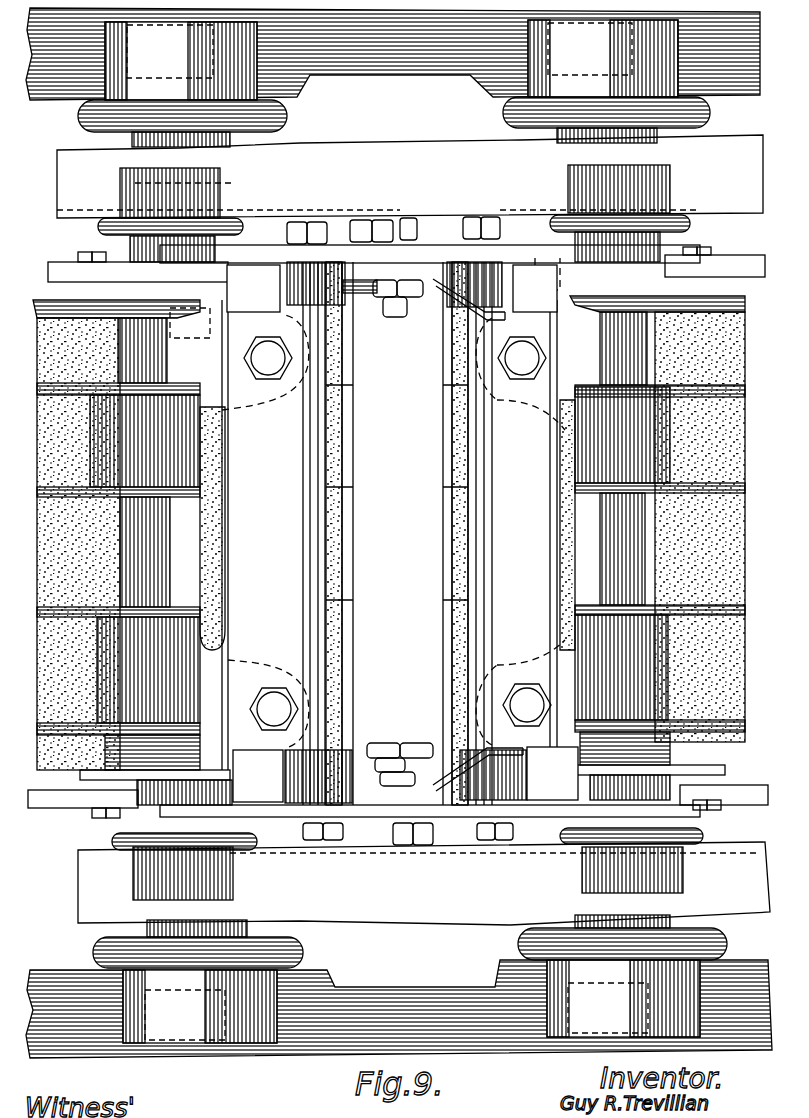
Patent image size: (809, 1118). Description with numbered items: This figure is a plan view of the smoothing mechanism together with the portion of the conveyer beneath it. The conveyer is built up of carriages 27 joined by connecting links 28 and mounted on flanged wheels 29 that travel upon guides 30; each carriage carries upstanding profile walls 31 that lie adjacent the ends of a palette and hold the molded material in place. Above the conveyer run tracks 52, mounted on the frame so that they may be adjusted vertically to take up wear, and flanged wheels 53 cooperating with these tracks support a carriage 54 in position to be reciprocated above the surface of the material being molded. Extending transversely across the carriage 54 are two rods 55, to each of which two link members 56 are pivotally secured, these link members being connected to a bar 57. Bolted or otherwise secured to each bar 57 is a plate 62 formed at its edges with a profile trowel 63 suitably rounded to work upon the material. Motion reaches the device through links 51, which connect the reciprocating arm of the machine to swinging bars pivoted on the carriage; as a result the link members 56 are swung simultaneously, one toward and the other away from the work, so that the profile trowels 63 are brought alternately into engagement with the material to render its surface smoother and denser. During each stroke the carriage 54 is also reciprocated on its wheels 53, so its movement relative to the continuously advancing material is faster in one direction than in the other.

The carriage 27 is at (275, 820).
The connecting link 28 is at (62, 268).
The flanged wheel 29 is at (82, 118).
The guide 30 is at (727, 85).
The profile wall 31 is at (457, 673).
The link 51 is at (450, 290).
The track 52 is at (413, 530).
The flanged wheel 53 is at (568, 172).
The carriage 54 is at (452, 842).
The rod 55 is at (305, 530).
The link member 56 is at (352, 300).
The bar 57 is at (387, 535).
The plate 62 is at (608, 556).
The profile trowel 63 is at (621, 667).